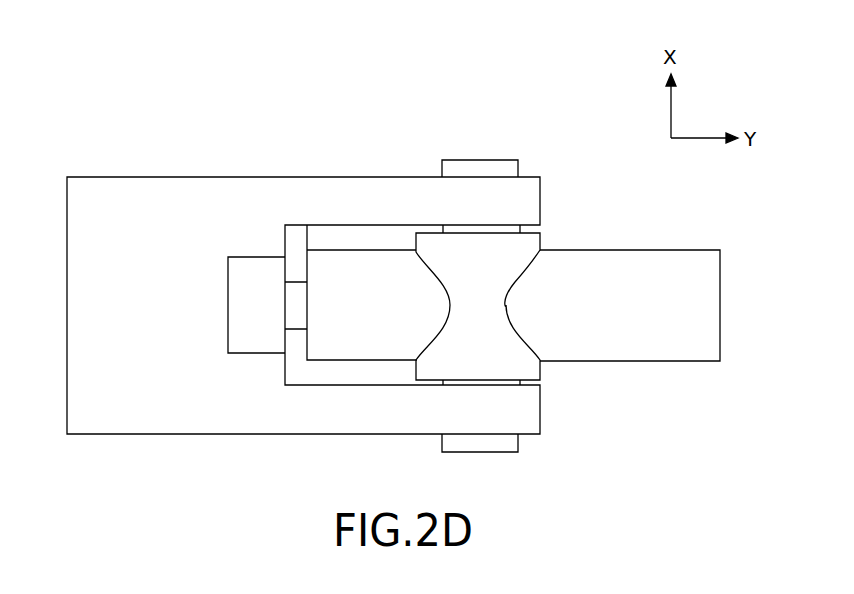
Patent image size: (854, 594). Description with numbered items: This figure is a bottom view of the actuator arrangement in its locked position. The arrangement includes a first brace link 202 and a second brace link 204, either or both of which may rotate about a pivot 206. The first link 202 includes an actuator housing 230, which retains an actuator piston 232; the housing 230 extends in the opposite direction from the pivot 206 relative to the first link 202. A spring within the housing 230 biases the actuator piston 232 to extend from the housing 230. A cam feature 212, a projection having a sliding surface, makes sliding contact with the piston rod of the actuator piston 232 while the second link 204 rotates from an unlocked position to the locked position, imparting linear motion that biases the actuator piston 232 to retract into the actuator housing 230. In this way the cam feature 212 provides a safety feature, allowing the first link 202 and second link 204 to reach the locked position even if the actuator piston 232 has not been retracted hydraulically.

The first brace link 202 is at (672, 262).
The second brace link 204 is at (95, 196).
The pivot 206 is at (487, 159).
The cam feature 212 is at (240, 269).
The actuator housing 230 is at (340, 351).
The actuator piston 232 is at (300, 307).